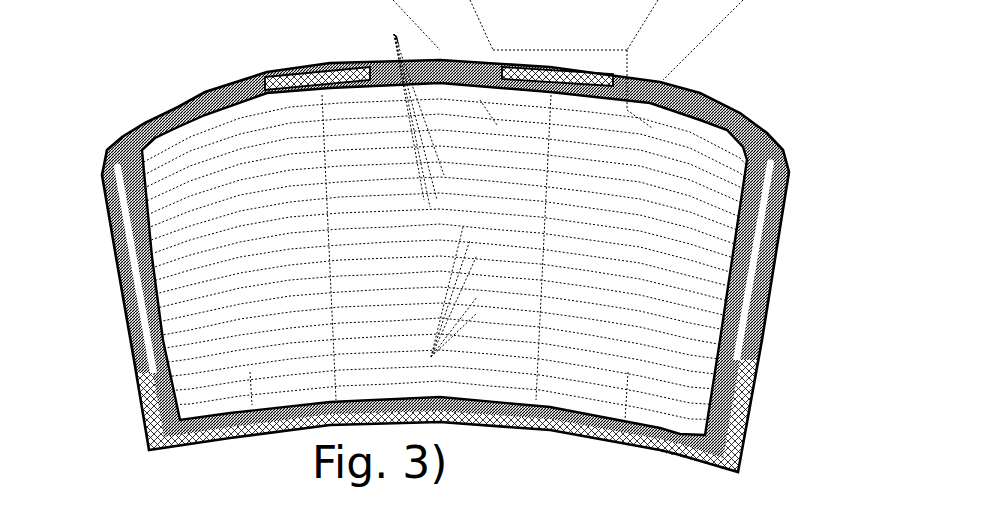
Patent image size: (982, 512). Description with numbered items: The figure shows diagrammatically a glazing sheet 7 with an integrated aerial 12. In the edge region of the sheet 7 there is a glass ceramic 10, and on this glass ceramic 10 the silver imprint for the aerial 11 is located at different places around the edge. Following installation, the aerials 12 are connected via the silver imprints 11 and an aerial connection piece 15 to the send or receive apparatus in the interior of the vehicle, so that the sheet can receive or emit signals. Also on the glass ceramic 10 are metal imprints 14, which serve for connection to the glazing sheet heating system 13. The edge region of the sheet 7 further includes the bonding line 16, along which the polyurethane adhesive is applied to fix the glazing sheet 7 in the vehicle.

The glazing sheet 7 is at (153, 100).
The glass ceramic 10 is at (706, 92).
The silver imprint for the aerial 11 is at (283, 76).
The aerial 12 is at (334, 385).
The glazing sheet heating system 13 is at (426, 195).
The metal imprints 14 is at (101, 160).
The aerial connection piece 15 is at (462, 433).
The bonding line 16 is at (755, 117).